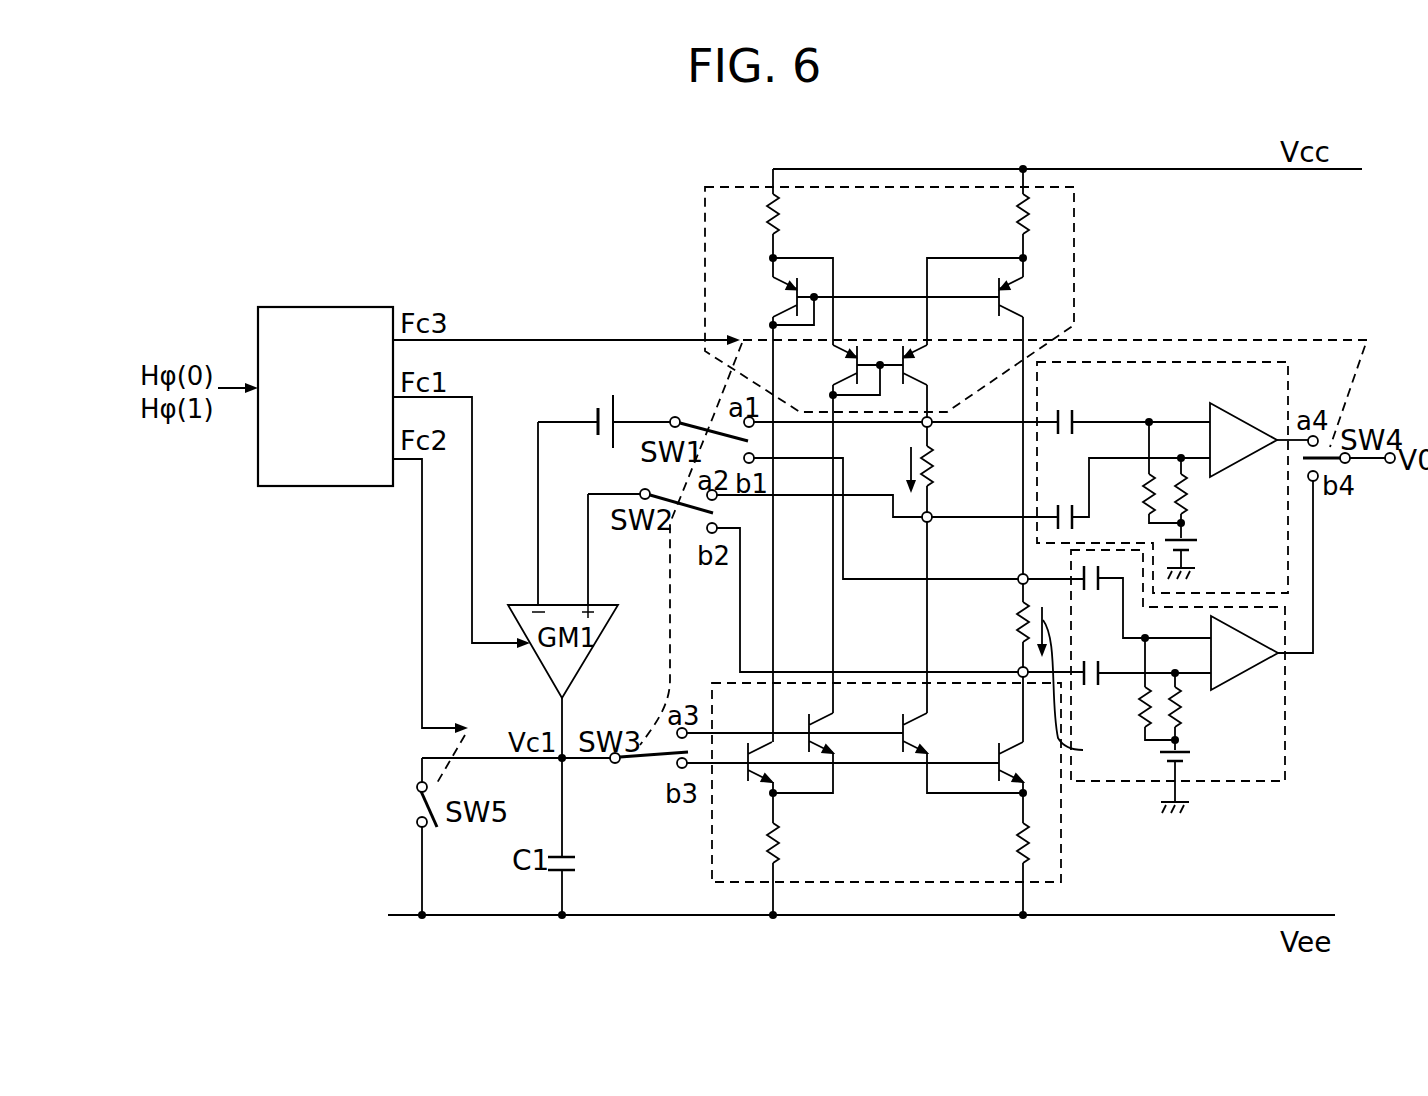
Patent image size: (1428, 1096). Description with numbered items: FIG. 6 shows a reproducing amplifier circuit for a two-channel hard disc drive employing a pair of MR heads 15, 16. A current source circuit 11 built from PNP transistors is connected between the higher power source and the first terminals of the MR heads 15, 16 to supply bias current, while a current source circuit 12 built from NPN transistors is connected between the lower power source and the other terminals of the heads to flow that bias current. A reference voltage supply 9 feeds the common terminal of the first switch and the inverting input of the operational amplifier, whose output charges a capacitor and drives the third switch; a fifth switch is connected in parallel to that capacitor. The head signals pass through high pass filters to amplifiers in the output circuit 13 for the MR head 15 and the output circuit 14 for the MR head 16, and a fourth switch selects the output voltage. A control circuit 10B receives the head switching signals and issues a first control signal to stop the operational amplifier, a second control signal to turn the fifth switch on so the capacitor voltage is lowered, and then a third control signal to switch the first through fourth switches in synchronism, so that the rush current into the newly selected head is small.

The reference voltage supply 9 is at (604, 403).
The control circuit 10B is at (337, 305).
The current source circuit 11 is at (1076, 225).
The current source circuit 12 is at (1063, 845).
The output circuit 13 is at (1290, 370).
The output circuit 14 is at (1287, 725).
The MR head 15 is at (945, 466).
The MR head 16 is at (1013, 607).